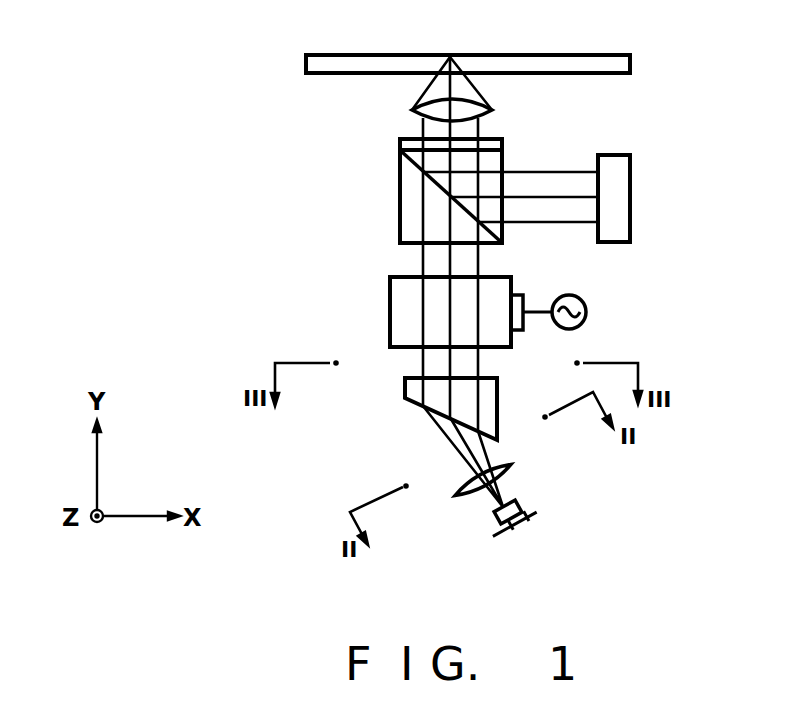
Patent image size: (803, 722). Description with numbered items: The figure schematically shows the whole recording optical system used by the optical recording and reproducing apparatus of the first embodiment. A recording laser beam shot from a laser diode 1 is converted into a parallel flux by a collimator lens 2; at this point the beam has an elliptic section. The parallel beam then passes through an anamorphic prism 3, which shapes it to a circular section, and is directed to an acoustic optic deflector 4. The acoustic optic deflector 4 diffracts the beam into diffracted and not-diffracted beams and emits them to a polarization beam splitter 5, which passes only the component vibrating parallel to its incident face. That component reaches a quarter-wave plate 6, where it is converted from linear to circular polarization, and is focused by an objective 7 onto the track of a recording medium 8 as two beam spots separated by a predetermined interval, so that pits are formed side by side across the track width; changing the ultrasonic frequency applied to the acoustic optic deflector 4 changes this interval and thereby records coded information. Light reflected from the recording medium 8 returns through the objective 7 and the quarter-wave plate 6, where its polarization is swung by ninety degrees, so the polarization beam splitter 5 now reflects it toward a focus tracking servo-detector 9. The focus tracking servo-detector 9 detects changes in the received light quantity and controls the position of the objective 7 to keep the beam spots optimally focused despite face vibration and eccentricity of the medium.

The laser diode 1 is at (524, 503).
The collimator lens 2 is at (460, 494).
The anamorphic prism 3 is at (405, 385).
The acoustic optic deflector 4 is at (390, 297).
The polarization beam splitter 5 is at (400, 178).
The quarter-wave plate 6 is at (410, 139).
The objective 7 is at (413, 110).
The recording medium 8 is at (603, 55).
The focus tracking servo-detector 9 is at (617, 155).